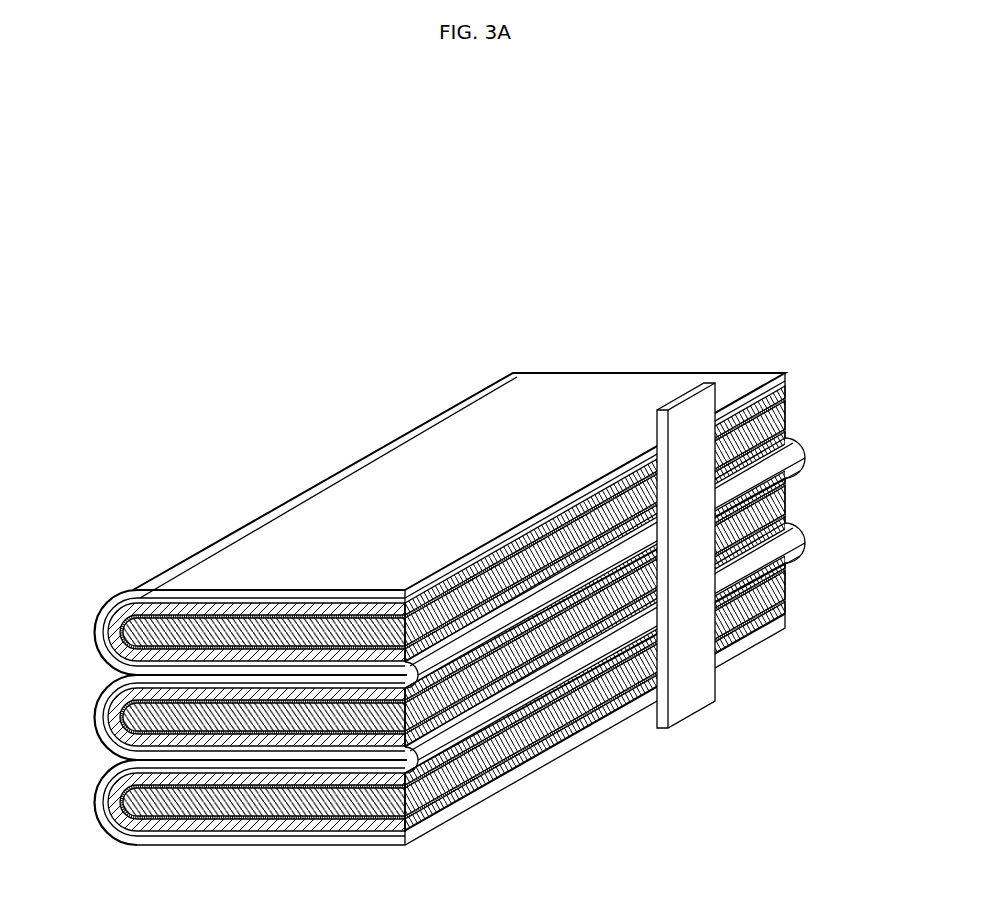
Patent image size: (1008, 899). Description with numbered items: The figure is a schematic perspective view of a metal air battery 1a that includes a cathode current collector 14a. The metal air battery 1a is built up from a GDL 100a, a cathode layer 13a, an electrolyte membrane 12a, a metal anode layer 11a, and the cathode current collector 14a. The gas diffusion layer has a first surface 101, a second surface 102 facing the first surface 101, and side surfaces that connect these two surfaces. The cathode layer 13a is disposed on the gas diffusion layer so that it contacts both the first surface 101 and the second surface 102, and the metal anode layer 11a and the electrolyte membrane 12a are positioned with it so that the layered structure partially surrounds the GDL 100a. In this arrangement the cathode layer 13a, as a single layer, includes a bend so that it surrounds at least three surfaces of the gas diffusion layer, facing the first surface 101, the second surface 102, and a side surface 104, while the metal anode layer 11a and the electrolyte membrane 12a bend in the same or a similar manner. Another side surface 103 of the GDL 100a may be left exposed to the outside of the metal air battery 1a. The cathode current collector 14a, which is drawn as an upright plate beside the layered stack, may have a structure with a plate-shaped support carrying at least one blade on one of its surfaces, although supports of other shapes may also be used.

The metal air battery 1a is at (314, 398).
The metal anode layer 11a is at (101, 611).
The electrolyte membrane 12a is at (104, 634).
The cathode layer 13a is at (112, 669).
The cathode current collector 14a is at (688, 704).
The GDL 100a is at (784, 589).
The first surface 101 is at (230, 798).
The second surface 102 is at (372, 815).
The side surface 103 is at (543, 553).
The side surface 104 is at (112, 722).